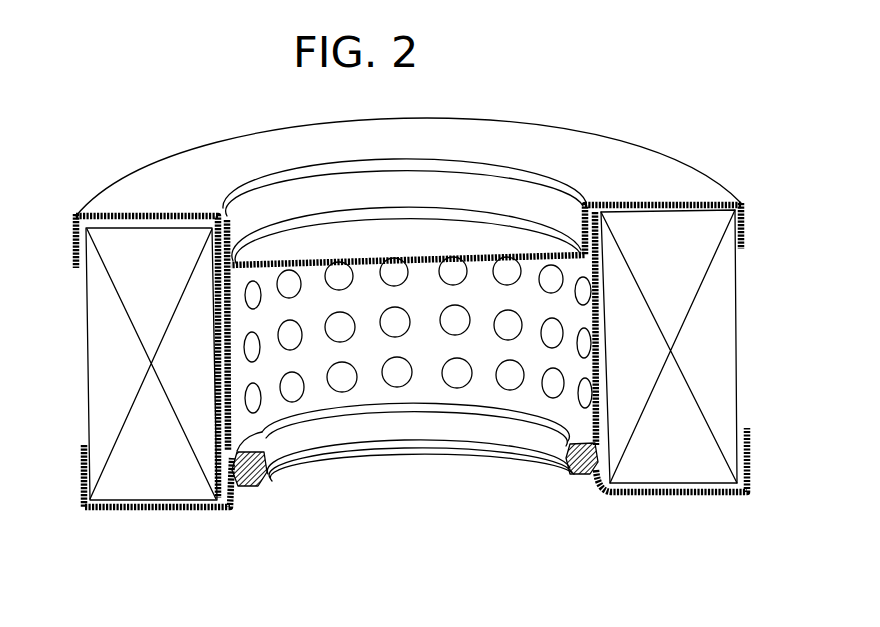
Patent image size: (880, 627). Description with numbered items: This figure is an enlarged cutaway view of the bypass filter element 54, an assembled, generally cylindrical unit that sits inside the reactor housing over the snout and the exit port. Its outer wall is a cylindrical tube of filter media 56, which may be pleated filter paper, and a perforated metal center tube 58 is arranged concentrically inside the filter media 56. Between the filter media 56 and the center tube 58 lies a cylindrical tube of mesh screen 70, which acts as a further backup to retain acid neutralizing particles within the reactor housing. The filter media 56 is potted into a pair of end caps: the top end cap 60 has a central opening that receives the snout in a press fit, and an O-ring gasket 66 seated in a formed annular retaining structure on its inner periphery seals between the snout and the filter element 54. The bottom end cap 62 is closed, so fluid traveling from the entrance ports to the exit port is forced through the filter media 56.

The filter element 54 is at (660, 107).
The filter media 56 is at (148, 413).
The center tube 58 is at (360, 357).
The top end cap 60 is at (164, 513).
The bottom end cap 62 is at (138, 213).
The O-ring gasket 66 is at (587, 487).
The mesh screen 70 is at (230, 378).